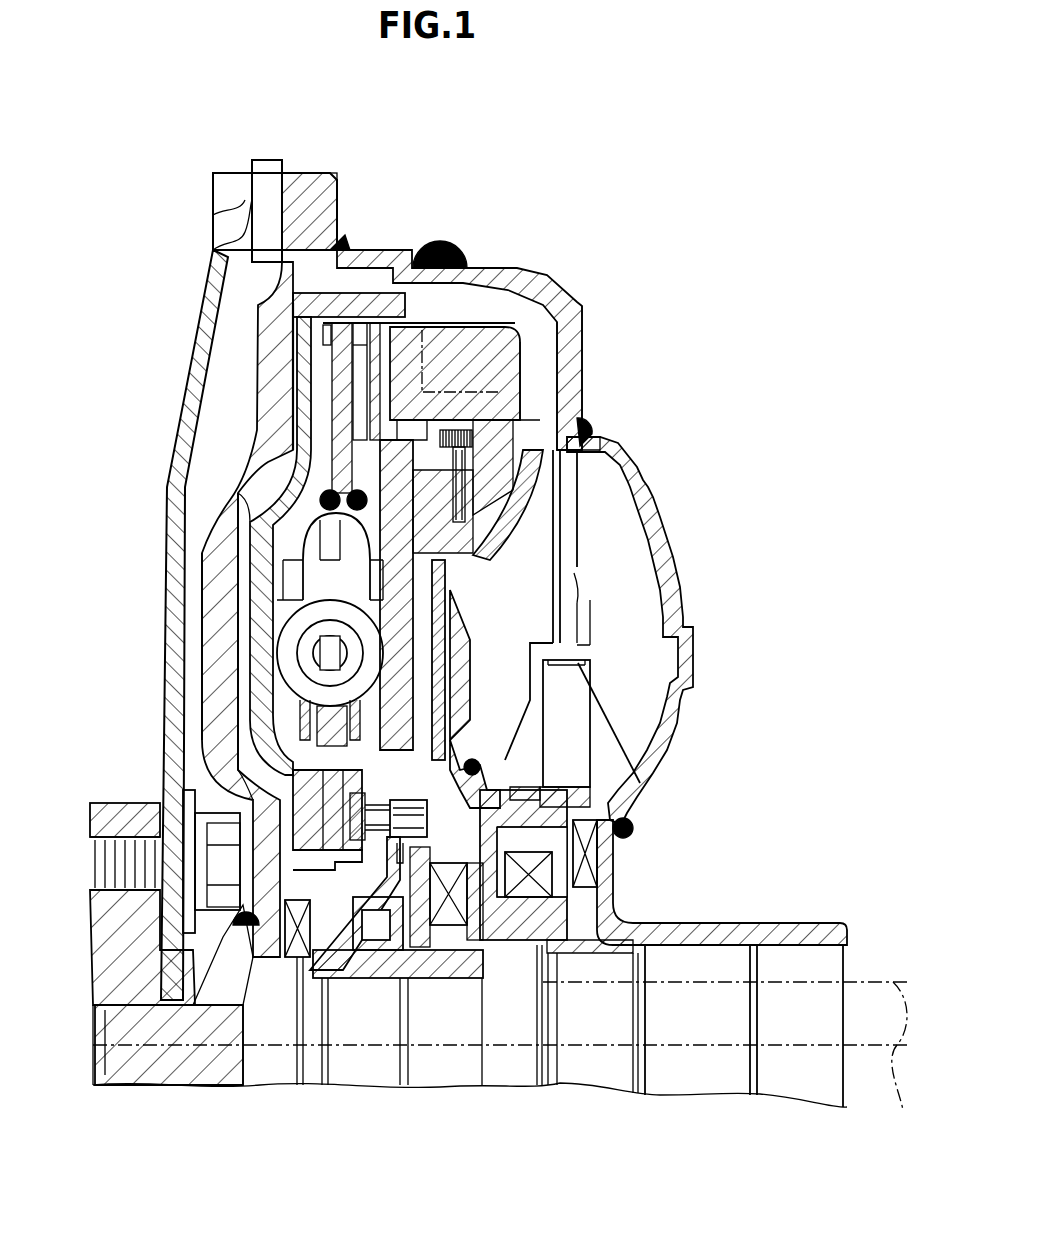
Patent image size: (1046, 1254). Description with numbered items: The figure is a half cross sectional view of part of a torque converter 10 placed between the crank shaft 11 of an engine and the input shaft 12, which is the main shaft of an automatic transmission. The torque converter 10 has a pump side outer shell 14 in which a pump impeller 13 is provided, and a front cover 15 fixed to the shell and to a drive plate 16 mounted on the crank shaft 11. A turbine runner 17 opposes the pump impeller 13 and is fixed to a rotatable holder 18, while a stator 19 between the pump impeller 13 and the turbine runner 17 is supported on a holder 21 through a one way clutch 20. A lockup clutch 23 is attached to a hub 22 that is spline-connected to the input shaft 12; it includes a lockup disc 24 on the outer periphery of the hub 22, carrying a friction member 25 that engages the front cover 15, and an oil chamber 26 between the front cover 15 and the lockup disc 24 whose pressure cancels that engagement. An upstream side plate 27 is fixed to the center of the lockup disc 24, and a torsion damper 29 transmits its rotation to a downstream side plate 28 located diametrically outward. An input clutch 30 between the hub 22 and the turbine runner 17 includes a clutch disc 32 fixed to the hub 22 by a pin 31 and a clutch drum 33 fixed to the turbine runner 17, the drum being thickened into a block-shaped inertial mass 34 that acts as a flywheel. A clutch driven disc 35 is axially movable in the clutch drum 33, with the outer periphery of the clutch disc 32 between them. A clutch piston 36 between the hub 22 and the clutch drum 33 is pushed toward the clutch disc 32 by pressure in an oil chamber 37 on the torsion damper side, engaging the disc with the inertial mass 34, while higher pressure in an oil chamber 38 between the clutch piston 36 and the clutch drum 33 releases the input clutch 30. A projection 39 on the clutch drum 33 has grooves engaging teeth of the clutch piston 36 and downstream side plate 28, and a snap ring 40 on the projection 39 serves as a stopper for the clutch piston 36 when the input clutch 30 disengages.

The torque converter 10 is at (543, 250).
The crank shaft 11 is at (123, 963).
The input shaft 12 is at (795, 983).
The pump impeller 13 is at (640, 575).
The pump side outer shell 14 is at (570, 388).
The front cover 15 is at (273, 430).
The drive plate 16 is at (173, 484).
The turbine runner 17 is at (540, 517).
The rotatable holder 18 is at (500, 977).
The stator 19 is at (573, 727).
The one way clutch 20 is at (540, 873).
The holder 21 is at (597, 953).
The hub 22 is at (355, 967).
The lockup clutch 23 is at (240, 610).
The lockup disc 24 is at (287, 676).
The friction member 25 is at (293, 340).
The oil chamber 26 is at (240, 578).
The upstream side plate 27 is at (330, 795).
The downstream side plate 28 is at (347, 390).
The torsion damper 29 is at (290, 688).
The input clutch 30 is at (545, 378).
The pin 31 is at (463, 770).
The clutch disc 32 is at (437, 658).
The clutch drum 33 is at (510, 420).
The inertial mass 34 is at (507, 330).
The clutch driven disc 35 is at (383, 560).
The clutch piston 36 is at (403, 613).
The oil chamber 37 is at (460, 578).
The oil chamber 38 is at (423, 698).
The projection 39 is at (333, 323).
The snap ring 40 is at (363, 330).